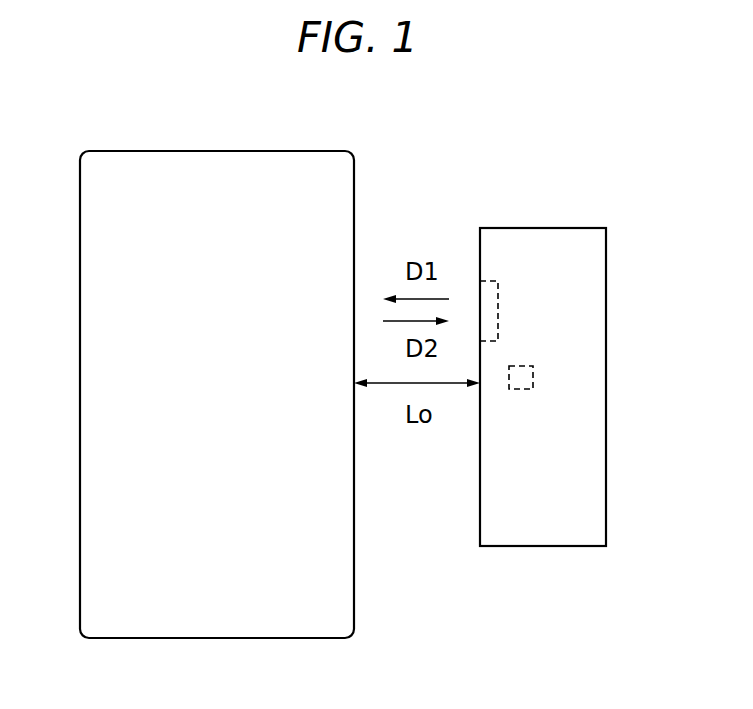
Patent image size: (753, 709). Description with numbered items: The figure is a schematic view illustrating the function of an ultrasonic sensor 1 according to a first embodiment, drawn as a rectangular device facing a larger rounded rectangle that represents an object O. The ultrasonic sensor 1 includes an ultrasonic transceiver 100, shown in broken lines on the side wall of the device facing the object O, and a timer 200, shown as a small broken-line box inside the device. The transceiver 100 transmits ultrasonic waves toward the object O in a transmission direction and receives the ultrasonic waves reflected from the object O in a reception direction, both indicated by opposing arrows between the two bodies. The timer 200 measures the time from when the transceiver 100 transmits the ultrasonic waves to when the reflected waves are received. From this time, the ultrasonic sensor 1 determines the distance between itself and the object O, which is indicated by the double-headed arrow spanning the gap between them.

The object O is at (66, 127).
The ultrasonic sensor 1 is at (641, 248).
The ultrasonic transceiver 100 is at (502, 296).
The timer 200 is at (534, 376).